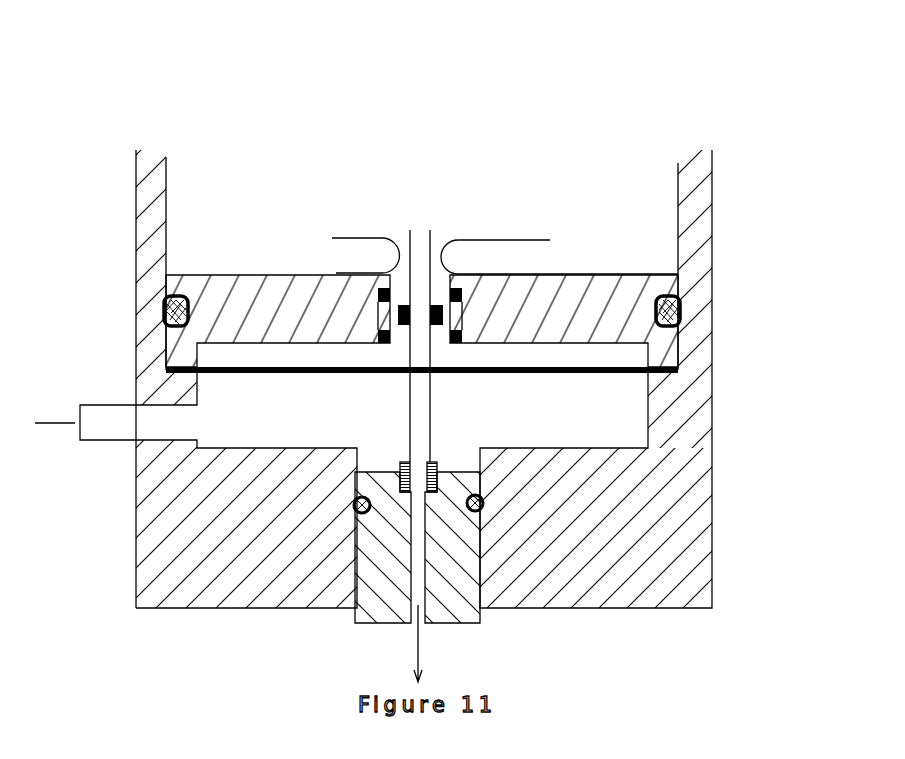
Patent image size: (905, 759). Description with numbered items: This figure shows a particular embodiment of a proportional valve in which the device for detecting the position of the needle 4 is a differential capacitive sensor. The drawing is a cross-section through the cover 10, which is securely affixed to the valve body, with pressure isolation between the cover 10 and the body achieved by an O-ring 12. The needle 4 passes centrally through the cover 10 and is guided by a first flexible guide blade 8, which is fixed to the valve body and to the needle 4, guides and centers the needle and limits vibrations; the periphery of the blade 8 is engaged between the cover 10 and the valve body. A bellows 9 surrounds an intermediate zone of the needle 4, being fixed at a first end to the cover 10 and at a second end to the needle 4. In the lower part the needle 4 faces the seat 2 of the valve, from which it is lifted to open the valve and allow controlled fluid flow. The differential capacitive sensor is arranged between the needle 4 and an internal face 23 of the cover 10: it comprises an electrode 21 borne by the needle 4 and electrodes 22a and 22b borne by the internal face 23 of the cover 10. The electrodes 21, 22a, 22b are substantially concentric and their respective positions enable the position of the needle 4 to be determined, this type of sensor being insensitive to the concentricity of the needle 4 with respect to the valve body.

The seat 2 is at (435, 477).
The needle 4 is at (432, 427).
The first flexible guide blade 8 is at (597, 374).
The bellows 9 is at (550, 240).
The cover 10 is at (595, 289).
The O-ring 12 is at (683, 312).
The electrode 21 is at (400, 317).
The electrode 22a is at (378, 291).
The electrode 22b is at (378, 337).
The internal face 23 is at (458, 289).